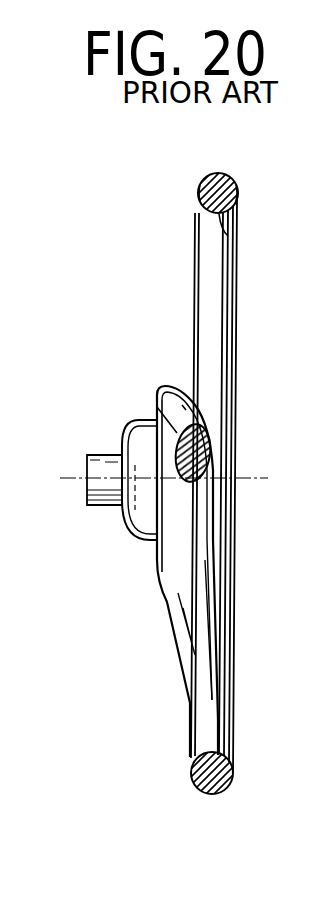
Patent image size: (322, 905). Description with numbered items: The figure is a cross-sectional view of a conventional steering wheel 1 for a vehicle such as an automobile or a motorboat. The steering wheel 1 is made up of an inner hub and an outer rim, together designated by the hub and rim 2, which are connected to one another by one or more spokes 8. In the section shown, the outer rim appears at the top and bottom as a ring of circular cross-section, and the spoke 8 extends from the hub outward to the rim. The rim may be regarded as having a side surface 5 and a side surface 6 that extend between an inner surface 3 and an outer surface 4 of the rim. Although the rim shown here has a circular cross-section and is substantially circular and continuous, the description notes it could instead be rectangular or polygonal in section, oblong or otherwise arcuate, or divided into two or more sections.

The steering wheel 1 is at (186, 308).
The hub and rim 2 is at (70, 476).
The inner surface 3 is at (214, 174).
The outer surface 4 is at (219, 214).
The side surface 5 is at (198, 190).
The side surface 6 is at (243, 194).
The spoke 8 is at (156, 398).